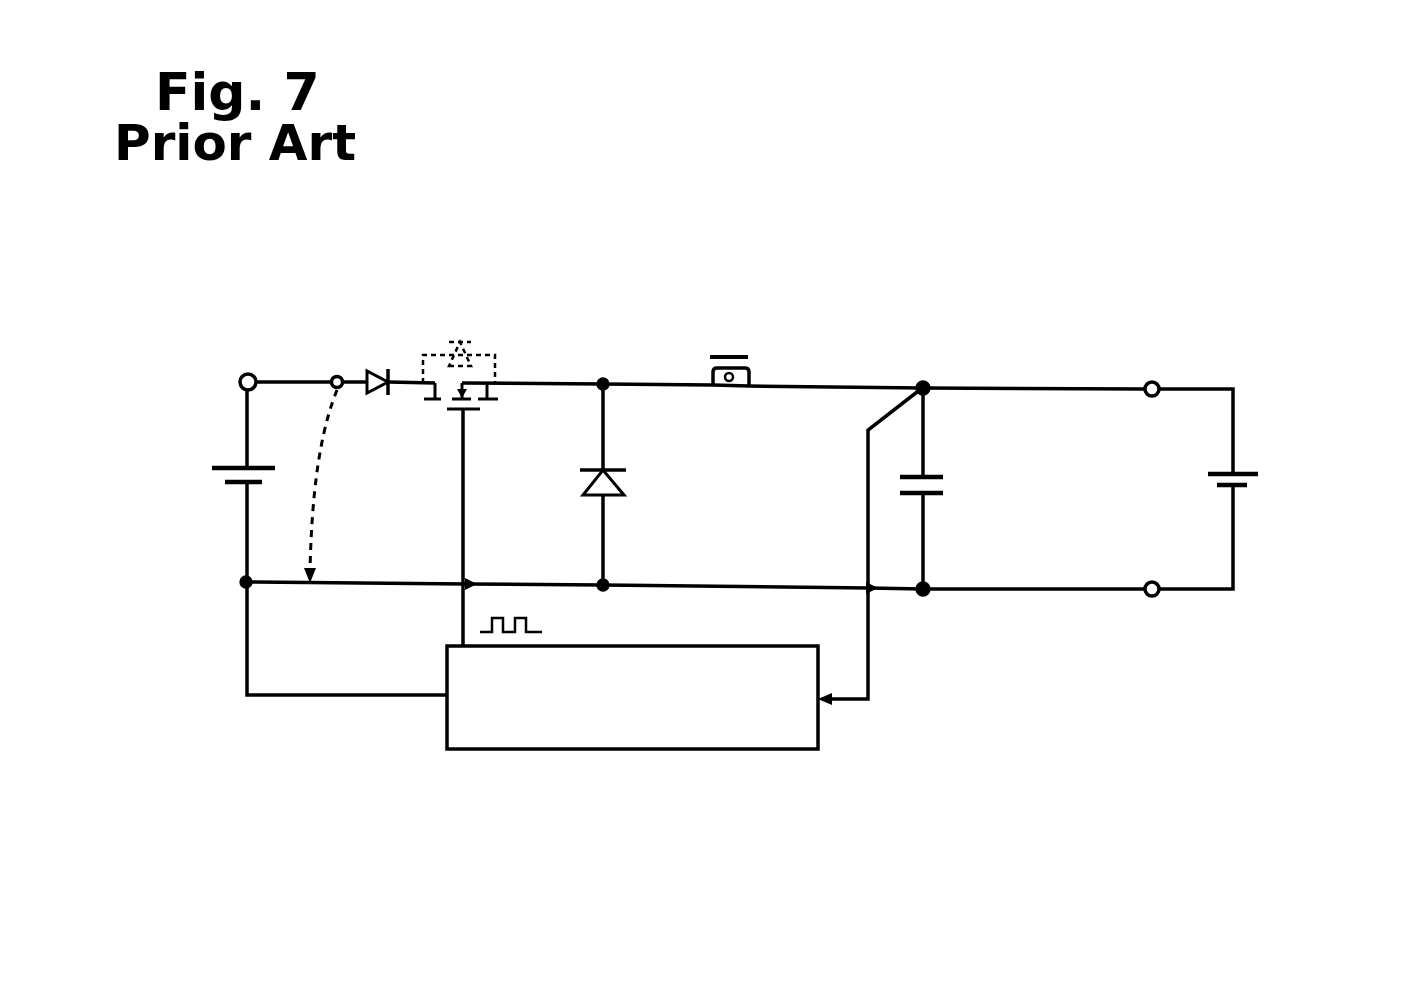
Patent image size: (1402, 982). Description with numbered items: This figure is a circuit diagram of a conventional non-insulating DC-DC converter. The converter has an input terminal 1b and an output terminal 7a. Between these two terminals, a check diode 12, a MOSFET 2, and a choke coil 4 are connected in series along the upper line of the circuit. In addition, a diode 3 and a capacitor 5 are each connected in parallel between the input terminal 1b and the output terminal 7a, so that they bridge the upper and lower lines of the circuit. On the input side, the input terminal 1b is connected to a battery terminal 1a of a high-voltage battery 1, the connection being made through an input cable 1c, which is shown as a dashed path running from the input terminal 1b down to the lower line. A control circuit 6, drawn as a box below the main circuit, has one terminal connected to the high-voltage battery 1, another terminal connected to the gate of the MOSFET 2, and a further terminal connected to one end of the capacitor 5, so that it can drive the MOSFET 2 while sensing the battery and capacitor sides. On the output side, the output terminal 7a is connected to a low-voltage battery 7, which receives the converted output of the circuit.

The high-voltage battery 1 is at (208, 468).
The battery terminal 1a is at (243, 377).
The input terminal 1b is at (338, 372).
The input cable 1c is at (280, 377).
The check diode 12 is at (371, 403).
The MOSFET 2 is at (465, 328).
The diode 3 is at (628, 484).
The choke coil 4 is at (730, 348).
The capacitor 5 is at (950, 487).
The control circuit 6 is at (638, 755).
The low-voltage battery 7 is at (1247, 463).
The output terminal 7a is at (1157, 380).